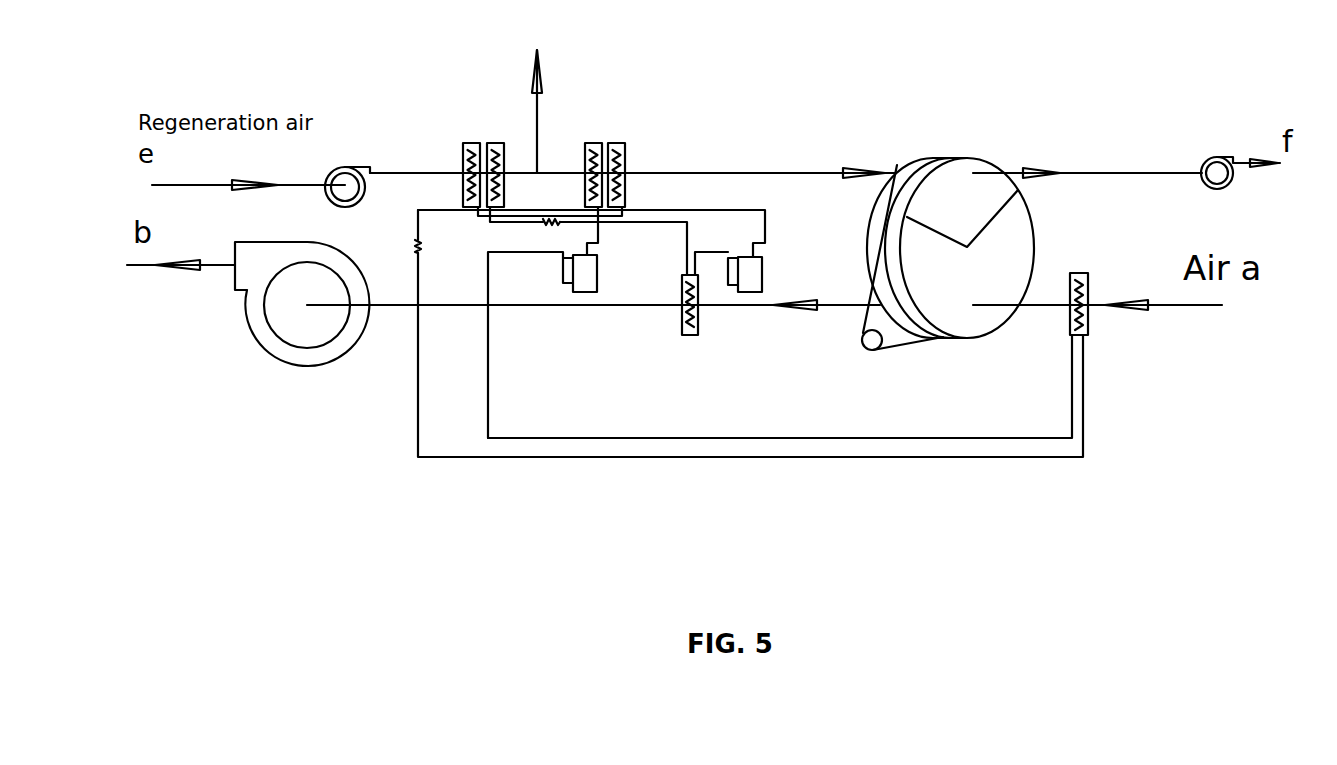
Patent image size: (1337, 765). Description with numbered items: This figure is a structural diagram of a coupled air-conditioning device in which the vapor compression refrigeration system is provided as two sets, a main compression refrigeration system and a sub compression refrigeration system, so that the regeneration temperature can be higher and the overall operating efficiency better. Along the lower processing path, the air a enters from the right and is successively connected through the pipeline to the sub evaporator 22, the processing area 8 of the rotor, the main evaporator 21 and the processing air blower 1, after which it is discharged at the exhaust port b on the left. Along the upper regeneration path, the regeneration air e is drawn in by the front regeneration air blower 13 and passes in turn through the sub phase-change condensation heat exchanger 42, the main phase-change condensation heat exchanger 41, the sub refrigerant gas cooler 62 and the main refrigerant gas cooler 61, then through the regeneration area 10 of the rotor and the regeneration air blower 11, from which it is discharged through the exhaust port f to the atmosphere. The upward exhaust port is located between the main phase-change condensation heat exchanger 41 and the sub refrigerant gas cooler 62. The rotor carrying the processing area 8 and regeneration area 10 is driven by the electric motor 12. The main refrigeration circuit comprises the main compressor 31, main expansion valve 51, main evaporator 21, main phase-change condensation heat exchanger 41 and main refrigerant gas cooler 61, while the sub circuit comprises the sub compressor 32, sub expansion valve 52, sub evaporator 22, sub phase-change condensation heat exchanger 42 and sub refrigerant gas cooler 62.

The processing air blower 1 is at (285, 325).
The processing area level-2 8 is at (963, 290).
The regeneration area level-2 10 is at (960, 192).
The regeneration air blower level-2 11 is at (1222, 157).
The electric motor 12 is at (868, 343).
The regeneration air blower 13 is at (357, 167).
The main evaporator 21 is at (683, 332).
The sub evaporator 22 is at (1082, 273).
The main compressor 31 is at (752, 270).
The sub compressor 32 is at (592, 267).
The main phase-change condensation heat exchanger 41 is at (498, 143).
The sub phase-change condensation heat exchanger 42 is at (470, 143).
The main expansion valve 51 is at (550, 222).
The sub expansion valve 52 is at (418, 253).
The main refrigerant gas cooler 61 is at (625, 143).
The sub refrigerant gas cooler 62 is at (597, 143).